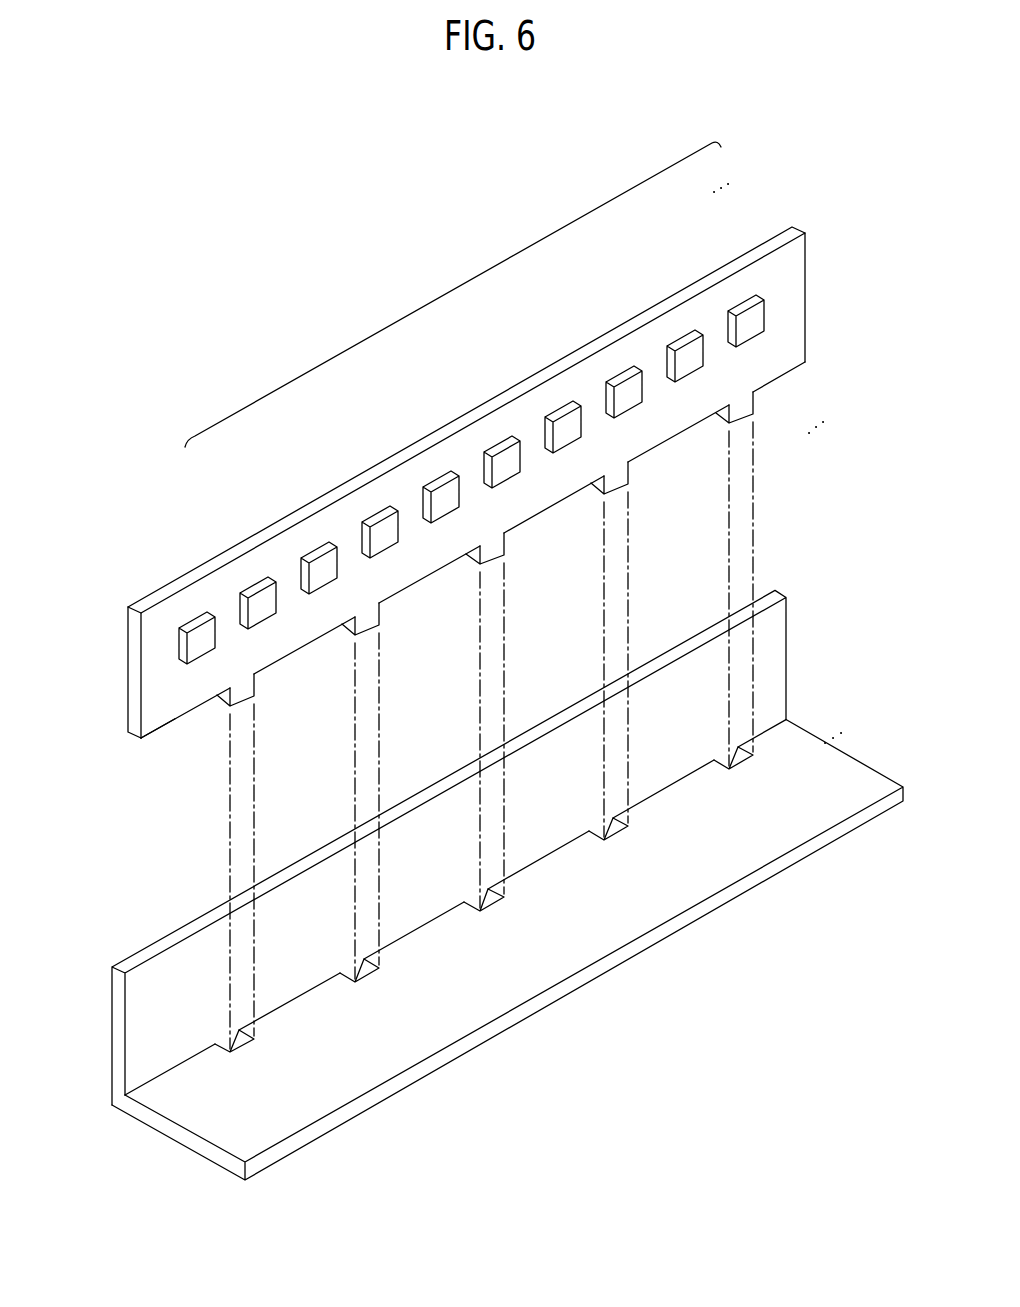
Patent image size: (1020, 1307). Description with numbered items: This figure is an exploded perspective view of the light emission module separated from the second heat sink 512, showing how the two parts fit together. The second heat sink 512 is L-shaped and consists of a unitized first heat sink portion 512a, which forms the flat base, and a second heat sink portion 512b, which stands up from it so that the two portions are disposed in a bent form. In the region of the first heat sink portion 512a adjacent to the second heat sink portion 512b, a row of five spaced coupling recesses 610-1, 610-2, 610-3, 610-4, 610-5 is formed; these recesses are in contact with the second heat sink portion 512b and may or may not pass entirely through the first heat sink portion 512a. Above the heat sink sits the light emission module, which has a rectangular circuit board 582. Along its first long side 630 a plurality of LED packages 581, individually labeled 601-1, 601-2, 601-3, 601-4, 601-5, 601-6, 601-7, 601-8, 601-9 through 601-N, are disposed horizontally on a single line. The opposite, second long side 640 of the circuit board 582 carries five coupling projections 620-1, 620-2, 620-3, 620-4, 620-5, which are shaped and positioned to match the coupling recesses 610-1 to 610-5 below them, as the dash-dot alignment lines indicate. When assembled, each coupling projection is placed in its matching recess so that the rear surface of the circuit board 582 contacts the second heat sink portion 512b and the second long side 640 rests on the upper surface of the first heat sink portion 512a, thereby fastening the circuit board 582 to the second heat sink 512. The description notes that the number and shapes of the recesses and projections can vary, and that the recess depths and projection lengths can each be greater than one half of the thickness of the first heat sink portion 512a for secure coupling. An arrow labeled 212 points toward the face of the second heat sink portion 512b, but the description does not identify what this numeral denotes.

The first long side 630 is at (167, 593).
The circuit board 582 is at (135, 674).
The second long side 640 is at (163, 727).
The LED packages 581 is at (445, 295).
The LED package 601-1 is at (199, 640).
The LED package 601-2 is at (260, 605).
The LED package 601-3 is at (321, 570).
The LED package 601-4 is at (382, 534).
The LED package 601-5 is at (443, 499).
The LED package 601-6 is at (504, 464).
The LED package 601-7 is at (565, 429).
The LED package 601-8 is at (626, 394).
The LED package 601-9 is at (687, 358).
The LED package 601-N is at (748, 323).
The coupling projection 620-1 is at (233, 706).
The coupling projection 620-2 is at (358, 635).
The coupling projection 620-3 is at (482, 564).
The coupling projection 620-4 is at (607, 494).
The coupling projection 620-5 is at (732, 423).
The coupling recess 610-1 is at (242, 1032).
The coupling recess 610-2 is at (367, 961).
The coupling recess 610-3 is at (492, 891).
The coupling recess 610-4 is at (616, 820).
The coupling recess 610-5 is at (741, 749).
The mounting surface 212 is at (546, 714).
The second heat sink 512 is at (471, 894).
The first heat sink portion 512a is at (87, 1187).
The second heat sink portion 512b is at (133, 1037).